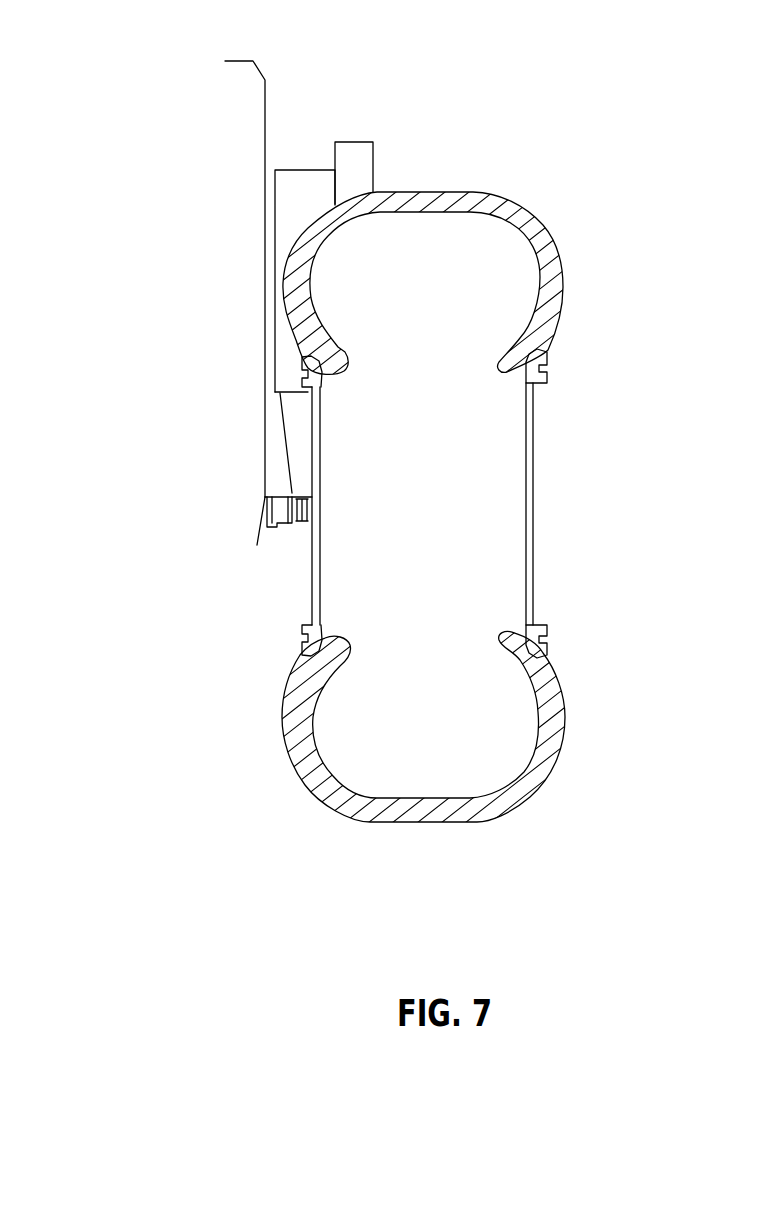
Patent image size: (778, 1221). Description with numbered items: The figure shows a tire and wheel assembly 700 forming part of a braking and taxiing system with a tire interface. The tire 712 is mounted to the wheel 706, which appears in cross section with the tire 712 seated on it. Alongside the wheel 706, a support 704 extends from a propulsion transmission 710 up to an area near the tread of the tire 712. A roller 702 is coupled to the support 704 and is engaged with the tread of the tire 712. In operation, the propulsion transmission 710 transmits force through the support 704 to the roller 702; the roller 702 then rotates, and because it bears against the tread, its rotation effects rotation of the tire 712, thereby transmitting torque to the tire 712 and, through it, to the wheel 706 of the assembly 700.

The tire and wheel assembly 700 is at (126, 66).
The roller 702 is at (374, 172).
The support 704 is at (275, 283).
The wheel 706 is at (275, 392).
The propulsion transmission 710 is at (284, 530).
The tire 712 is at (484, 180).